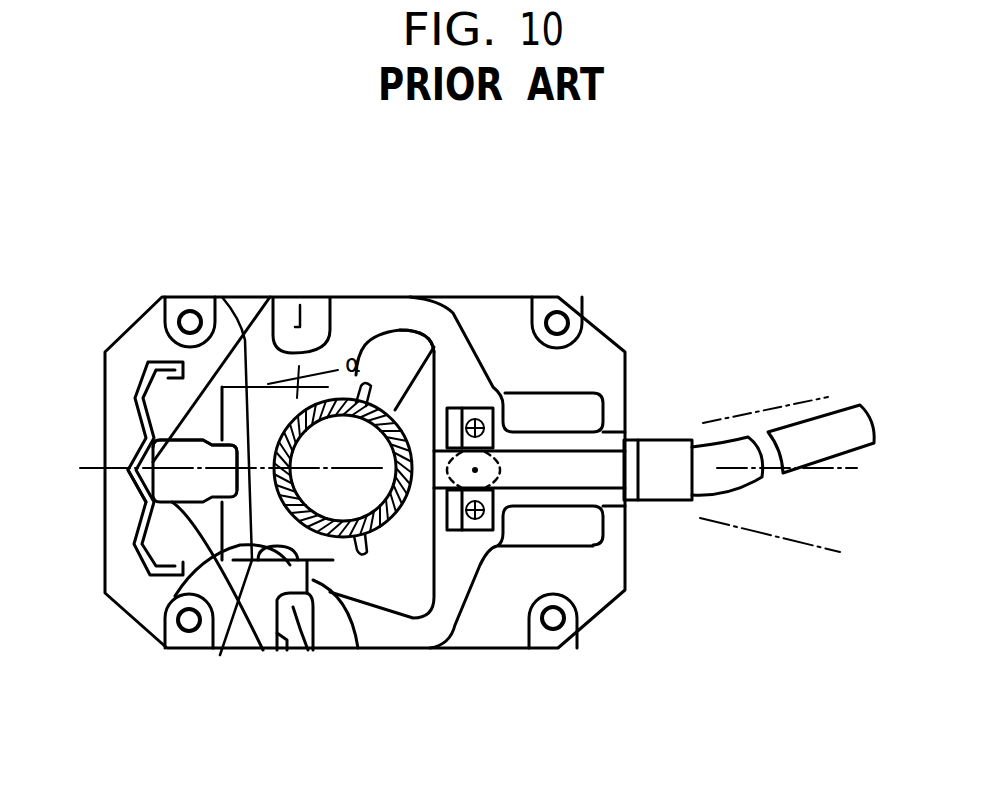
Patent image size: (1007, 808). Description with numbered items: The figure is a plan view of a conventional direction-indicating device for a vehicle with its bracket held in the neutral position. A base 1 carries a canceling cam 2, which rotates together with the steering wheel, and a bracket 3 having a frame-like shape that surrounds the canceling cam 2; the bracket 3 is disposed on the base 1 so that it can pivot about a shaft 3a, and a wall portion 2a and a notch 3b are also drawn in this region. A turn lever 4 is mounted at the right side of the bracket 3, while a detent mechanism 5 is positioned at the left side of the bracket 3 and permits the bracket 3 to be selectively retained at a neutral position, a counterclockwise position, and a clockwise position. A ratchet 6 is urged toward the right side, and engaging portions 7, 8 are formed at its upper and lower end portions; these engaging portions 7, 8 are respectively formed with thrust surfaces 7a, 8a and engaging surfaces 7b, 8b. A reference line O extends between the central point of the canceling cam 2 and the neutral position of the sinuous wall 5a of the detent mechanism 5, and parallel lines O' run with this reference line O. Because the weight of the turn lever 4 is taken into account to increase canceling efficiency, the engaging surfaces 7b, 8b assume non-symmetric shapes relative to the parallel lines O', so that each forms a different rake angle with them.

The base 1 is at (510, 296).
The canceling cam 2 is at (454, 297).
The bore wall 2a is at (405, 297).
The bracket 3 is at (368, 297).
The shaft 3a is at (503, 467).
The seal notch 3b is at (303, 322).
The turn lever 4 is at (727, 443).
The detent mechanism 5 is at (130, 503).
The sinuous wall 5a is at (127, 482).
The ratchet 6 is at (225, 415).
The engaging portion 7 is at (252, 297).
The thrust surface 7a is at (337, 353).
The engaging surface 7b is at (160, 430).
The engaging portion 8 is at (277, 578).
The thrust surface 8a is at (347, 620).
The engaging surface 8b is at (175, 596).
The reference line O is at (450, 447).
The parallel lines O' is at (218, 455).